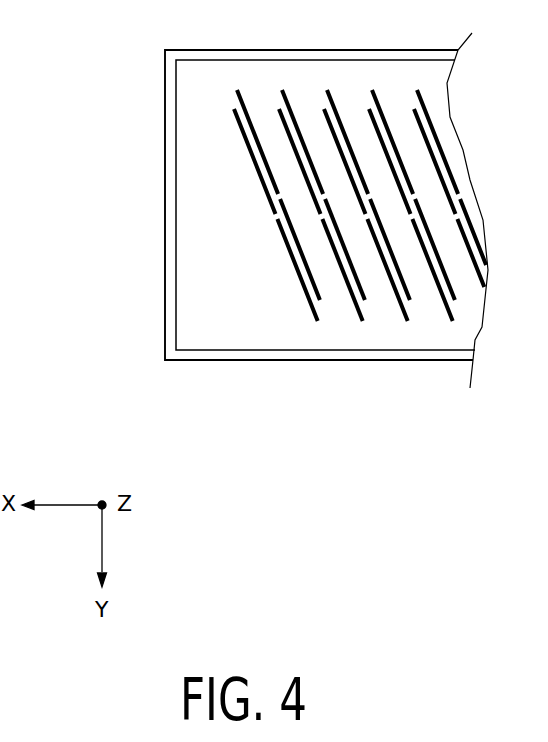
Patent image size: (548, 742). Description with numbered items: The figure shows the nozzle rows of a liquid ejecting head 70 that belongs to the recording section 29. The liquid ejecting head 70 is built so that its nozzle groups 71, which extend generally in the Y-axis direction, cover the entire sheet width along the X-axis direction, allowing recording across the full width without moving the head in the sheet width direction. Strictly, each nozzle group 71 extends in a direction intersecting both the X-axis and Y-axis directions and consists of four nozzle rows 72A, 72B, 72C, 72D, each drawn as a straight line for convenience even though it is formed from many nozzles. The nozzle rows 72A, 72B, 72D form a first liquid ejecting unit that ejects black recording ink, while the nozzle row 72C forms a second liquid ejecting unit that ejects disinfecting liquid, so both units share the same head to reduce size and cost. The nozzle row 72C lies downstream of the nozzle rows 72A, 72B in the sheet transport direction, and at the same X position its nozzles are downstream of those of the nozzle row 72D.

The recording section 29 is at (166, 138).
The liquid ejecting head 70 is at (176, 215).
The nozzle group 71 is at (281, 73).
The nozzle row 72A is at (288, 138).
The nozzle row 72B is at (293, 117).
The nozzle row 72C is at (360, 277).
The nozzle row 72D is at (360, 277).